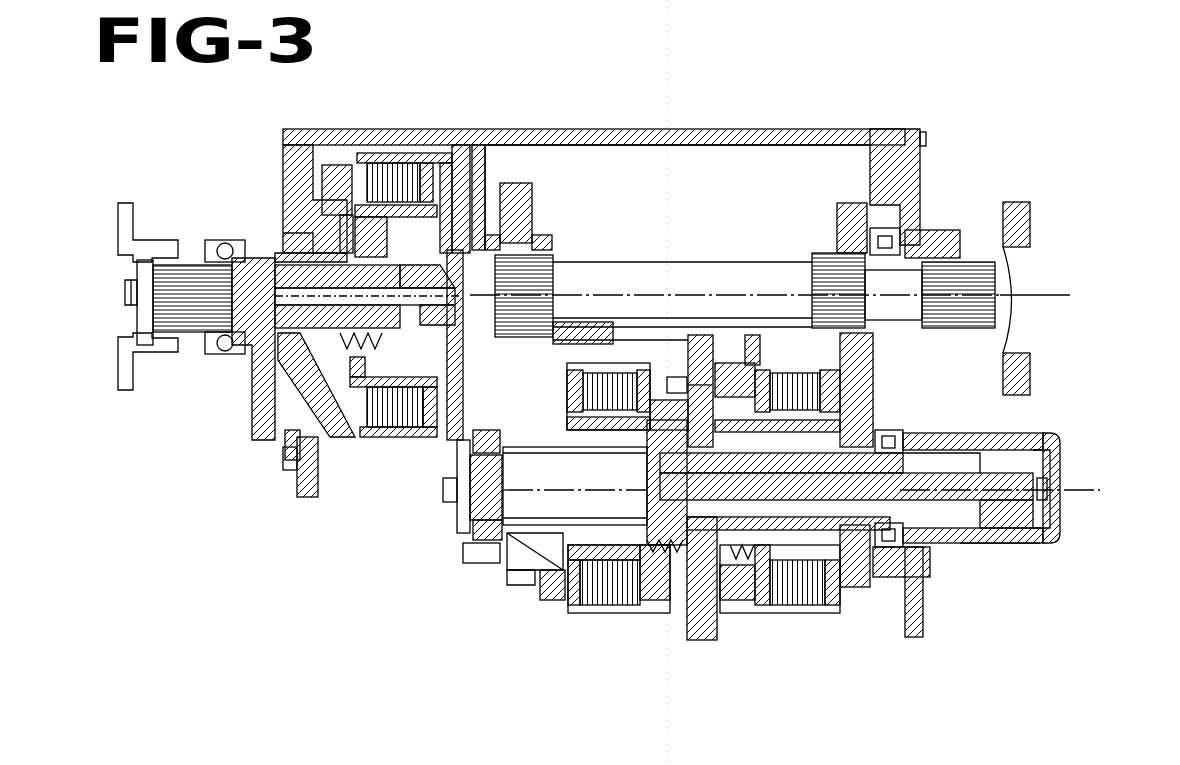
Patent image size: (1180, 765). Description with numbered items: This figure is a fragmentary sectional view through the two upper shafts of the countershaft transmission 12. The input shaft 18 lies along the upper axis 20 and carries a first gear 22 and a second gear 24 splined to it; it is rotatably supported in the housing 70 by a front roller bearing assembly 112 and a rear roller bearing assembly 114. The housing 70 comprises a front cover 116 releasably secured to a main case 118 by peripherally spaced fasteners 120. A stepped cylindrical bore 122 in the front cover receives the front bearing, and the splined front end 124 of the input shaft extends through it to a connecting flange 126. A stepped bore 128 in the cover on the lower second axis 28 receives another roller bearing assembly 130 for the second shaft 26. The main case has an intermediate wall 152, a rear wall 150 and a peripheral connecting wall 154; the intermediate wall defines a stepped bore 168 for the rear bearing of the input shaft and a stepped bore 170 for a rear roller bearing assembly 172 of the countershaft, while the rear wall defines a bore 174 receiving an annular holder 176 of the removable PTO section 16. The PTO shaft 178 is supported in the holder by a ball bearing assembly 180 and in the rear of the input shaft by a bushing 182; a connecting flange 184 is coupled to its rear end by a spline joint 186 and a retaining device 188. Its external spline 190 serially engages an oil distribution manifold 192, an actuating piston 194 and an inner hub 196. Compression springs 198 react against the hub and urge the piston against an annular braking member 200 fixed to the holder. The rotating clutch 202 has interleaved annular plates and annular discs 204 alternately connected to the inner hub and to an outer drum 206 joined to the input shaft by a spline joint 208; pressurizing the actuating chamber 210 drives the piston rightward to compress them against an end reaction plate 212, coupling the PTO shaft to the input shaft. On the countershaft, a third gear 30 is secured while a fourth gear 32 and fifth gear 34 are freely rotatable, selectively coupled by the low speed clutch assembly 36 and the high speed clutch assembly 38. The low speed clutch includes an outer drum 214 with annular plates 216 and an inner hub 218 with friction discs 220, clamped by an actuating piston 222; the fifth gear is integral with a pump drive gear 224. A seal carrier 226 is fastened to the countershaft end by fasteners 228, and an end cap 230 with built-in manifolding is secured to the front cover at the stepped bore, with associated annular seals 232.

The countershaft transmission 12 is at (555, 80).
The PTO section 16 is at (240, 178).
The input shaft 18 is at (680, 270).
The upper axis 20 is at (1060, 297).
The first gear 22 is at (830, 205).
The second gear 24 is at (525, 195).
The second shaft 26 is at (582, 496).
The second axis 28 is at (1100, 490).
The third gear 30 is at (700, 640).
The fourth gear 32 is at (855, 590).
The fifth gear 34 is at (520, 580).
The low speed rotating clutch assembly 36 is at (805, 615).
The high speed rotating clutch assembly 38 is at (608, 615).
The housing 70 is at (695, 127).
The front roller bearing assembly 112 is at (885, 240).
The rear roller bearing assembly 114 is at (520, 245).
The front cover 116 is at (895, 128).
The main case 118 is at (752, 128).
The fasteners 120 is at (927, 140).
The stepped cylindrical bore 122 is at (925, 260).
The splined front end 124 is at (985, 290).
The connecting flange 126 is at (1030, 218).
The stepped bore 128 is at (925, 440).
The roller bearing assembly 130 is at (905, 440).
The rear wall 150 is at (300, 480).
The intermediate wall 152 is at (480, 158).
The peripheral connecting wall 154 is at (718, 145).
The stepped bore 168 is at (545, 356).
The stepped bore 170 is at (470, 535).
The rear roller bearing assembly 172 is at (480, 548).
The bore 174 is at (298, 425).
The annular holder 176 is at (265, 380).
The PTO shaft 178 is at (165, 305).
The ball bearing assembly 180 is at (215, 248).
The bushing 182 is at (550, 268).
The connecting flange 184 is at (120, 218).
The spline joint 186 is at (188, 345).
The retaining device 188 is at (122, 285).
The external spline 190 is at (322, 302).
The oil distribution manifold 192 is at (290, 400).
The actuating piston 194 is at (345, 165).
The inner hub 196 is at (437, 218).
The compression springs 198 is at (392, 342).
The annular braking member 200 is at (320, 185).
The rotating clutch 202 is at (372, 150).
The annular plates and annular discs 204 is at (410, 163).
The outer drum 206 is at (455, 145).
The spline joint 208 is at (420, 312).
The actuating chamber 210 is at (300, 205).
The end reaction plate 212 is at (430, 432).
The outer drum 214 is at (753, 365).
The annular plates 216 is at (755, 335).
The inner hub 218 is at (840, 478).
The friction discs 220 is at (805, 372).
The actuating piston 222 is at (760, 600).
The pump drive gear 224 is at (553, 600).
The seal carrier 226 is at (1023, 512).
The fasteners 228 is at (1060, 480).
The end cap 230 is at (1030, 438).
The annular seals 232 is at (1012, 546).